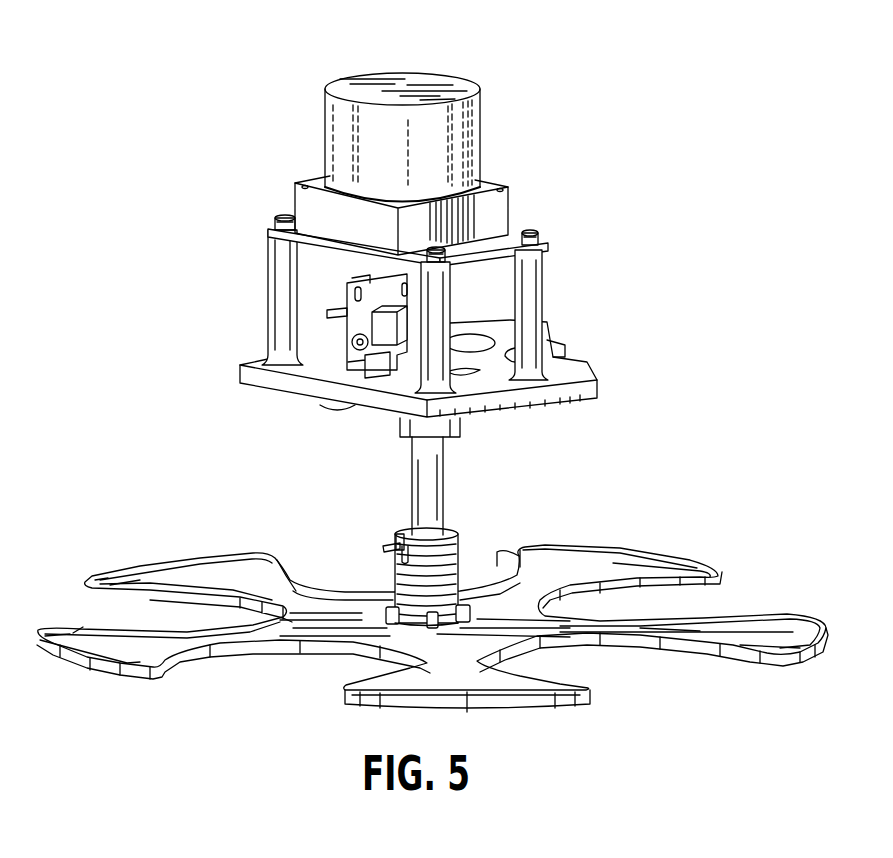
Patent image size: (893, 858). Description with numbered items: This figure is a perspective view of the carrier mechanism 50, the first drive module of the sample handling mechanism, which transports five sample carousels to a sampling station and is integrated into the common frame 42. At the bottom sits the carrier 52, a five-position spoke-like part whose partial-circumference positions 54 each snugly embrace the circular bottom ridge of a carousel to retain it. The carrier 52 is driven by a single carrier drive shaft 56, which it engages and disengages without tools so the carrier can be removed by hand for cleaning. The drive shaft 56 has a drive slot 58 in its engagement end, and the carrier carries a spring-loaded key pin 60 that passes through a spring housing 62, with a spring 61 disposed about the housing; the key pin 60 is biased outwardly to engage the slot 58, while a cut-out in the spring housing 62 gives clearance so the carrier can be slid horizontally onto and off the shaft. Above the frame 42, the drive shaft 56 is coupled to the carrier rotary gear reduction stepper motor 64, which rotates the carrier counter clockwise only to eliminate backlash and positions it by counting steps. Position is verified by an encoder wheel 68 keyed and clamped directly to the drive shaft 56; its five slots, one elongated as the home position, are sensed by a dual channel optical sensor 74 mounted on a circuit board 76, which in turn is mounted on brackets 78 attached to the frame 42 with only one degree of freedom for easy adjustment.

The carrier mechanism 50 is at (236, 92).
The carrier rotary gear reduction stepper motor 64 is at (452, 85).
The frame 42 is at (548, 415).
The circuit board 76 is at (362, 308).
The dual channel optical interrupter or sensor 74 is at (383, 325).
The brackets 78 is at (363, 372).
The encoder wheel 68 is at (380, 370).
The carrier drive shaft 56 is at (440, 480).
The drive slot 58 is at (412, 524).
The spring-loaded key pin 60 is at (432, 607).
The carrier 52 is at (587, 547).
The partial-circumference positions 54 is at (200, 600).
The spring housing 62 is at (396, 580).
The spring 61 is at (440, 612).